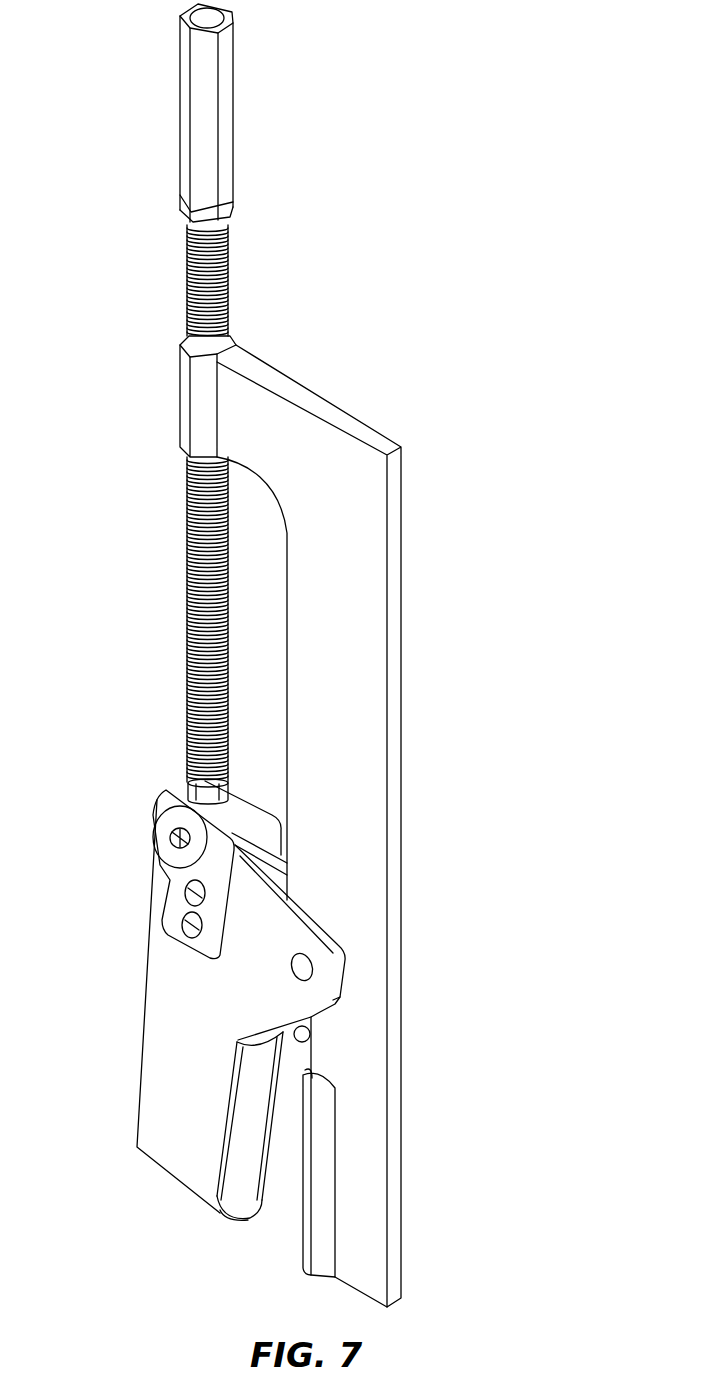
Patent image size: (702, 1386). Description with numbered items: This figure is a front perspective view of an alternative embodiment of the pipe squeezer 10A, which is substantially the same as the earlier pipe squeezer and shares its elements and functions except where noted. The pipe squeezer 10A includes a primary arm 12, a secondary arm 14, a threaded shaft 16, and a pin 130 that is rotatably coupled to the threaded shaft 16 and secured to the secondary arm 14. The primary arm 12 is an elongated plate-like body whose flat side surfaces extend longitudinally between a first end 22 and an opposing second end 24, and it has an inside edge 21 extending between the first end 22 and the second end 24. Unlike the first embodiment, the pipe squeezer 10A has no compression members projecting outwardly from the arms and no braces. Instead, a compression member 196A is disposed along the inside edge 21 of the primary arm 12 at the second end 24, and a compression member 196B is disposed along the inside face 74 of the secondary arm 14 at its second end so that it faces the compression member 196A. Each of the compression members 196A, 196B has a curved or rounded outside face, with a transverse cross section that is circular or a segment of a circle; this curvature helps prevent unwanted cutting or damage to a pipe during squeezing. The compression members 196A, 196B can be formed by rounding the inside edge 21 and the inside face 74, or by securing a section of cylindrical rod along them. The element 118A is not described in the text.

The pipe squeezer 10A is at (460, 70).
The hex adjustment head 118A is at (225, 100).
The threaded shaft 16 is at (188, 658).
The primary arm 12 is at (383, 767).
The first end 22 is at (437, 499).
The second end 24 is at (466, 1286).
The pin 130 is at (228, 825).
The secondary arm 14 is at (170, 1001).
The inside face 74 is at (230, 1103).
The compression member 196B is at (235, 1187).
The compression member 196A is at (303, 1213).
The inside edge 21 is at (308, 1048).